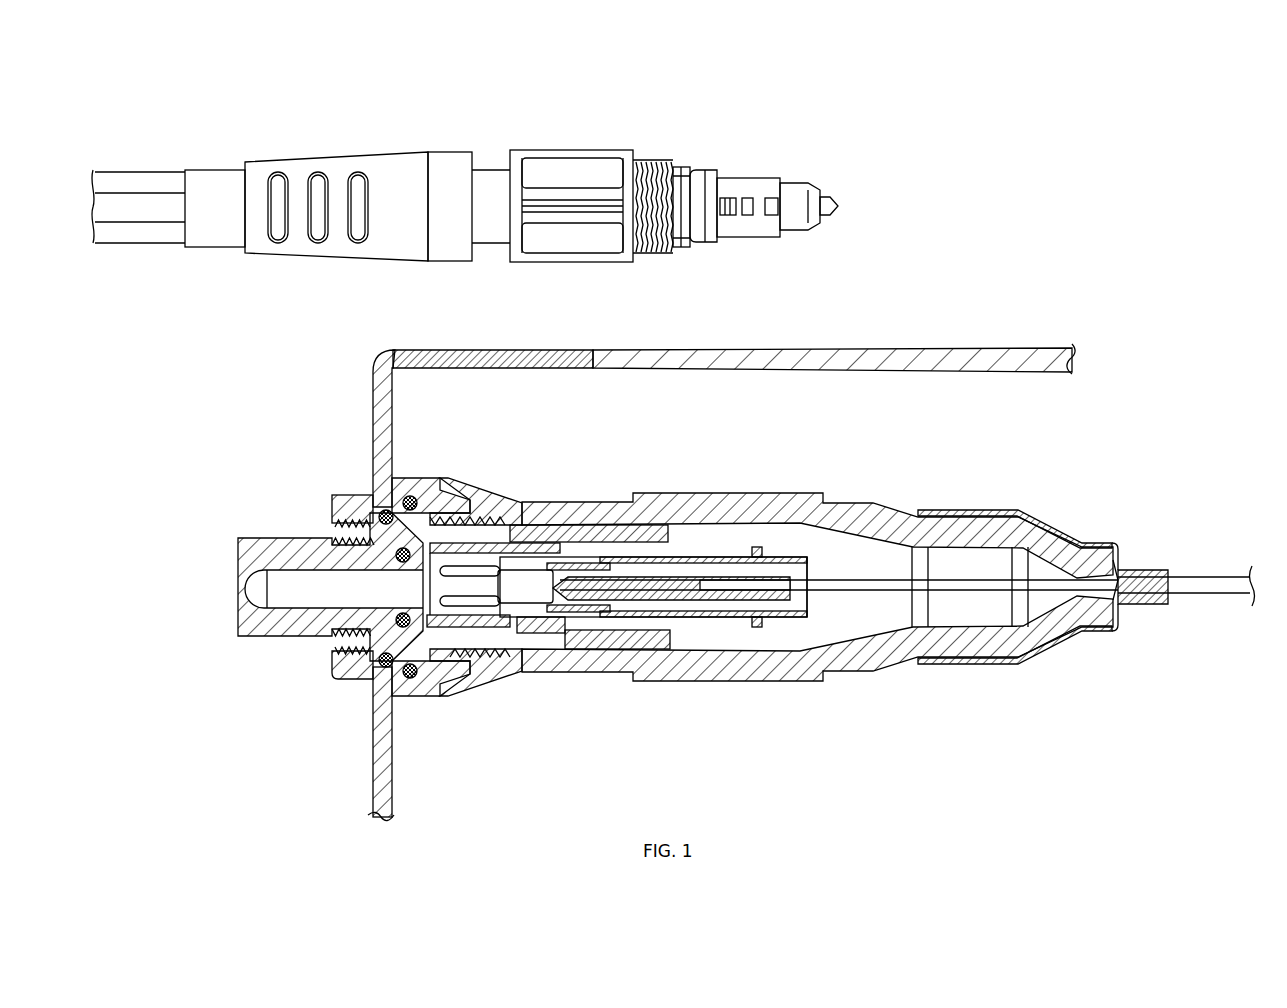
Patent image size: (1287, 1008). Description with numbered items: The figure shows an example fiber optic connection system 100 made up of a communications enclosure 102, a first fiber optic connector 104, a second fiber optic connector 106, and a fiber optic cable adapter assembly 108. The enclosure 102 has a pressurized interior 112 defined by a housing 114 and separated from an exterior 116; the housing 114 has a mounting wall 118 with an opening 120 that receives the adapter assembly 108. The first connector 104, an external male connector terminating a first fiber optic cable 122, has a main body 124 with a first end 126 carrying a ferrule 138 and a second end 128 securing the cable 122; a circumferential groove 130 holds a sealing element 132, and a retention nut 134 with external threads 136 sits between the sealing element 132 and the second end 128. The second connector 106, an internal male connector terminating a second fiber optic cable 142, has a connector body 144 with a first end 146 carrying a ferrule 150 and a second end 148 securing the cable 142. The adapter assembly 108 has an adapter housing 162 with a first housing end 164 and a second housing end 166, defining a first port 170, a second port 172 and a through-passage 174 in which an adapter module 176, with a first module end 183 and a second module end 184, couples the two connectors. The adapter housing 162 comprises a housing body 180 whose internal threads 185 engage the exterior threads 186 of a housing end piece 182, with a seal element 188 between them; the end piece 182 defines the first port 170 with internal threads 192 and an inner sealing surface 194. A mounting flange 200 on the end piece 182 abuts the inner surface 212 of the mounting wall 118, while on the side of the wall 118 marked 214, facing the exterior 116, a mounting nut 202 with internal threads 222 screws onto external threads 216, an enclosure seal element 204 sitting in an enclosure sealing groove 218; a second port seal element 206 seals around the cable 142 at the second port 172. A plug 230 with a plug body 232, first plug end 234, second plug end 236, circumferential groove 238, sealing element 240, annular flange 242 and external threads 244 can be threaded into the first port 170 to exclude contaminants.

The fiber optic connection system 100 is at (1135, 73).
The communications enclosure 102 is at (751, 336).
The first fiber optic connector 104 is at (366, 94).
The second fiber optic connector 106 is at (763, 624).
The fiber optic cable adapter assembly 108 is at (720, 424).
The interior 112 is at (545, 420).
The housing 114 is at (513, 357).
The exterior 116 is at (292, 430).
The mounting wall 118 is at (393, 409).
The opening 120 is at (353, 677).
The first fiber optic cable 122 is at (157, 185).
The main body 124 is at (499, 168).
The first end 126 is at (731, 171).
The second end 128 is at (478, 273).
The circumferential groove 130 is at (688, 168).
The sealing element 132 is at (700, 170).
The retention nut 134 is at (575, 165).
The external threads 136 is at (655, 258).
The ferrule 138 is at (793, 182).
The second fiber optic cable 142 is at (1205, 575).
The connector body 144 is at (740, 601).
The first end 146 is at (658, 661).
The second end 148 is at (793, 604).
The ferrule 150 is at (653, 558).
The adapter housing 162 is at (635, 458).
The first housing end 164 is at (373, 700).
The second housing end 166 is at (1125, 650).
The first port 170 is at (333, 622).
The second port 172 is at (1117, 566).
The through-passage 174 is at (846, 560).
The adapter module 176 is at (695, 643).
The housing body 180 is at (705, 496).
The housing end piece 182 is at (477, 481).
The first module end 183 is at (520, 661).
The second module end 184 is at (813, 639).
The internal threads 185 is at (468, 661).
The exterior threads 186 is at (497, 661).
The seal element 188 is at (477, 499).
The internal threads 192 is at (347, 545).
The inner sealing surface 194 is at (388, 557).
The mounting flange 200 is at (402, 479).
The mounting nut 202 is at (333, 503).
The enclosure seal element 204 is at (395, 486).
The second port seal element 206 is at (1020, 510).
The inner surface 212 is at (402, 390).
The outer wall surface 214 is at (364, 391).
The external threads 216 is at (332, 508).
The enclosure sealing groove 218 is at (375, 503).
The internal threads 222 is at (330, 527).
The plug 230 is at (221, 599).
The plug body 232 is at (245, 612).
The first plug end 234 is at (241, 650).
The second plug end 236 is at (430, 681).
The circumferential groove 238 is at (403, 614).
The sealing element 240 is at (443, 478).
The annular flange 242 is at (327, 652).
The external threads 244 is at (300, 538).